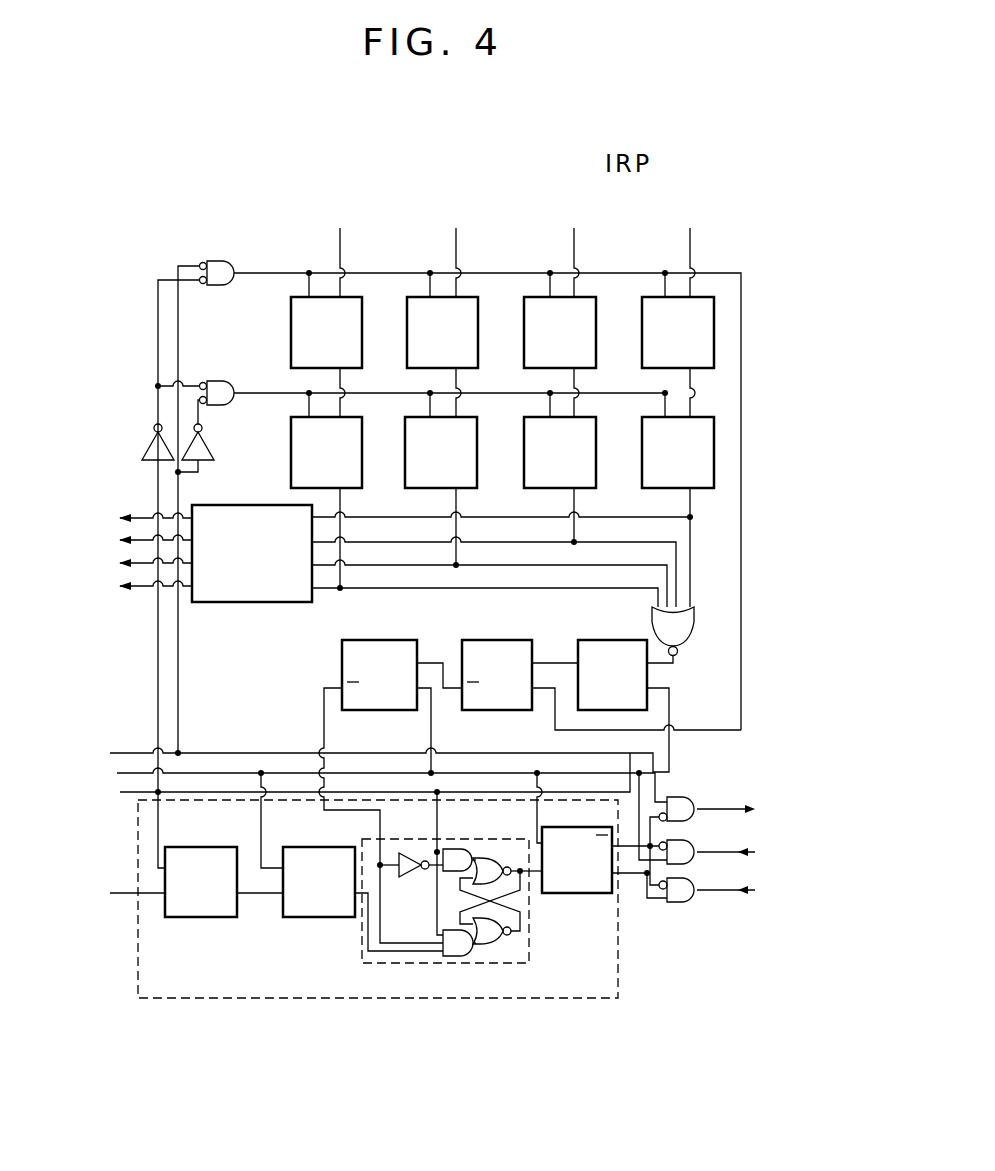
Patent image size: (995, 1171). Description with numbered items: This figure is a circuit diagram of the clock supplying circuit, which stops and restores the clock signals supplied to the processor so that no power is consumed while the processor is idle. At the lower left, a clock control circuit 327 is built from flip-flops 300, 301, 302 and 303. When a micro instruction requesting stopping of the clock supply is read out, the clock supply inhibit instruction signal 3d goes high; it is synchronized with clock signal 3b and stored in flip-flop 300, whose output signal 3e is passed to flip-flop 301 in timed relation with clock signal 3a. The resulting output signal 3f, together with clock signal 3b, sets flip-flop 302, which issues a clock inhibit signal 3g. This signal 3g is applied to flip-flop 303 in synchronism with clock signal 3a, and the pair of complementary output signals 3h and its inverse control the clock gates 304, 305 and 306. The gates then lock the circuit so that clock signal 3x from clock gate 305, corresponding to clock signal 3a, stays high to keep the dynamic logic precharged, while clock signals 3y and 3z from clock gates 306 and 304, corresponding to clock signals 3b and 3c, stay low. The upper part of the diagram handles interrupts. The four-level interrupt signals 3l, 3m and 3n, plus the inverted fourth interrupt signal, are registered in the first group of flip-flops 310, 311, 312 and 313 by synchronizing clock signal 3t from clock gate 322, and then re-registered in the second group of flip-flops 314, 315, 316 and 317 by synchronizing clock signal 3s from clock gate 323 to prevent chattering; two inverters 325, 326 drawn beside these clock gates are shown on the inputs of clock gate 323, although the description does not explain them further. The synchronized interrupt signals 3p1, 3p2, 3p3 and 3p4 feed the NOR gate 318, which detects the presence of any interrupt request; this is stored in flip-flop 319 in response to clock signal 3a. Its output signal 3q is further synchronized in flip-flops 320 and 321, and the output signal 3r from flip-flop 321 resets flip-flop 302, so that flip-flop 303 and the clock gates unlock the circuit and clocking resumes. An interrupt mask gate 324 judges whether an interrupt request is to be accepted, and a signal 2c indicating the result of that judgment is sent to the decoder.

The flip-flop 300 is at (190, 918).
The flip-flop 301 is at (300, 918).
The flip-flop 302 is at (384, 965).
The flip-flop 303 is at (565, 895).
The clock gate 304 is at (710, 790).
The clock gate 305 is at (714, 855).
The clock gate 306 is at (714, 897).
The flip-flop 310 is at (291, 322).
The flip-flop 311 is at (415, 290).
The flip-flop 312 is at (540, 290).
The flip-flop 313 is at (652, 290).
The flip-flop 314 is at (291, 462).
The flip-flop 315 is at (405, 432).
The flip-flop 316 is at (524, 432).
The flip-flop 317 is at (642, 432).
The NOR gate 318 is at (686, 640).
The flip-flop 319 is at (590, 640).
The flip-flop 320 is at (512, 640).
The flip-flop 321 is at (392, 640).
The clock gate 322 is at (210, 258).
The clock gate 323 is at (214, 380).
The interrupt mask gate 324 is at (252, 603).
The inverter 325 is at (205, 466).
The inverter 326 is at (148, 470).
The clock control circuit 327 is at (618, 968).
The signal 2c is at (140, 521).
The clock signal 3a is at (117, 773).
The clock signal 3b is at (120, 792).
The clock signal 3c is at (124, 746).
The clock supply inhibit instruction signal 3d is at (112, 892).
The output signal 3e is at (256, 896).
The output signal 3f is at (358, 918).
The clock inhibit signal 3g is at (532, 876).
The output signal 3h is at (636, 880).
The interrupt signal 3l is at (341, 238).
The interrupt signal 3m is at (457, 238).
The interrupt signal 3n is at (575, 238).
The synchronized interrupt signal 3p1 is at (343, 500).
The synchronized interrupt signal 3p2 is at (459, 500).
The synchronized interrupt signal 3p3 is at (577, 500).
The synchronized interrupt signal 3p4 is at (692, 514).
The output signal 3q is at (556, 660).
The output signal 3r is at (322, 728).
The synchronizing clock signal 3s is at (246, 398).
The synchronizing clock signal 3t is at (262, 273).
The clock signal 3x is at (748, 853).
The clock signal 3y is at (748, 891).
The clock signal 3z is at (752, 796).